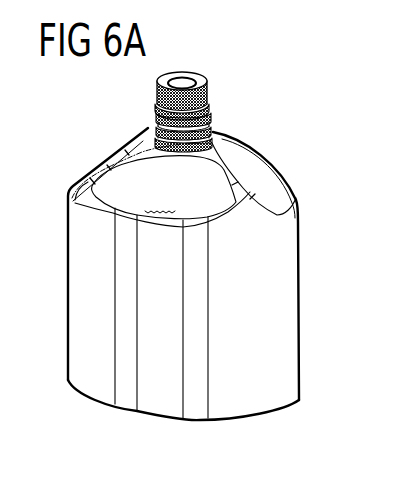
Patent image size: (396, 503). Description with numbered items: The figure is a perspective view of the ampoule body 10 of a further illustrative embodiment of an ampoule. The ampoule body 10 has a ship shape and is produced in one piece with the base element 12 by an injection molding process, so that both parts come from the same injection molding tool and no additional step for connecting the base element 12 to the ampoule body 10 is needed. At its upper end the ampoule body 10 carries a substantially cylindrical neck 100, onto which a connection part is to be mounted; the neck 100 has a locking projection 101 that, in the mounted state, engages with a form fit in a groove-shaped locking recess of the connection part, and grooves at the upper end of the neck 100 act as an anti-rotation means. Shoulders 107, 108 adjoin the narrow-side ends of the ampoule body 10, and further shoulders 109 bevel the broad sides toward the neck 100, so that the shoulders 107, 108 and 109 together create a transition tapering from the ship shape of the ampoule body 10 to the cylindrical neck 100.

The ampoule body 10 is at (300, 316).
The base element 12 is at (229, 424).
The neck 100 is at (207, 92).
The locking projection 101 is at (213, 110).
The shoulder 107 is at (98, 170).
The shoulder 108 is at (288, 188).
The further shoulders 109 is at (205, 183).